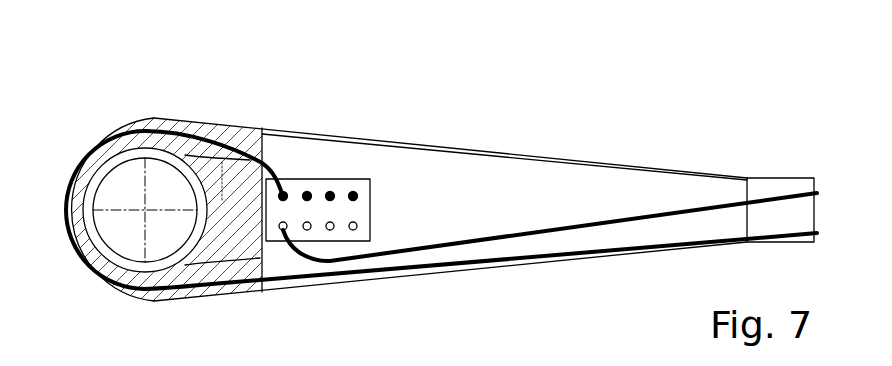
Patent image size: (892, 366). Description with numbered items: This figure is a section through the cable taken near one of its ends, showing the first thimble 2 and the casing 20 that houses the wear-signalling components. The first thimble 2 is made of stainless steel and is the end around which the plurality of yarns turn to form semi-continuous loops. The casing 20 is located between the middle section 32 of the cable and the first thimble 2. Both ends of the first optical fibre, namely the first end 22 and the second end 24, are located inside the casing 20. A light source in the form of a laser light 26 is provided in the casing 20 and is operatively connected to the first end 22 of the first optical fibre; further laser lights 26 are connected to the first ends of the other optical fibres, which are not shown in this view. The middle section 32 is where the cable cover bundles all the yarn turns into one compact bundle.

The first thimble 2 is at (96, 79).
The casing 20 is at (369, 289).
The first end of the first optical fibre 22 is at (283, 196).
The second end of the first optical fibre 24 is at (283, 230).
The laser light 26 is at (307, 196).
The middle section 32 is at (774, 166).